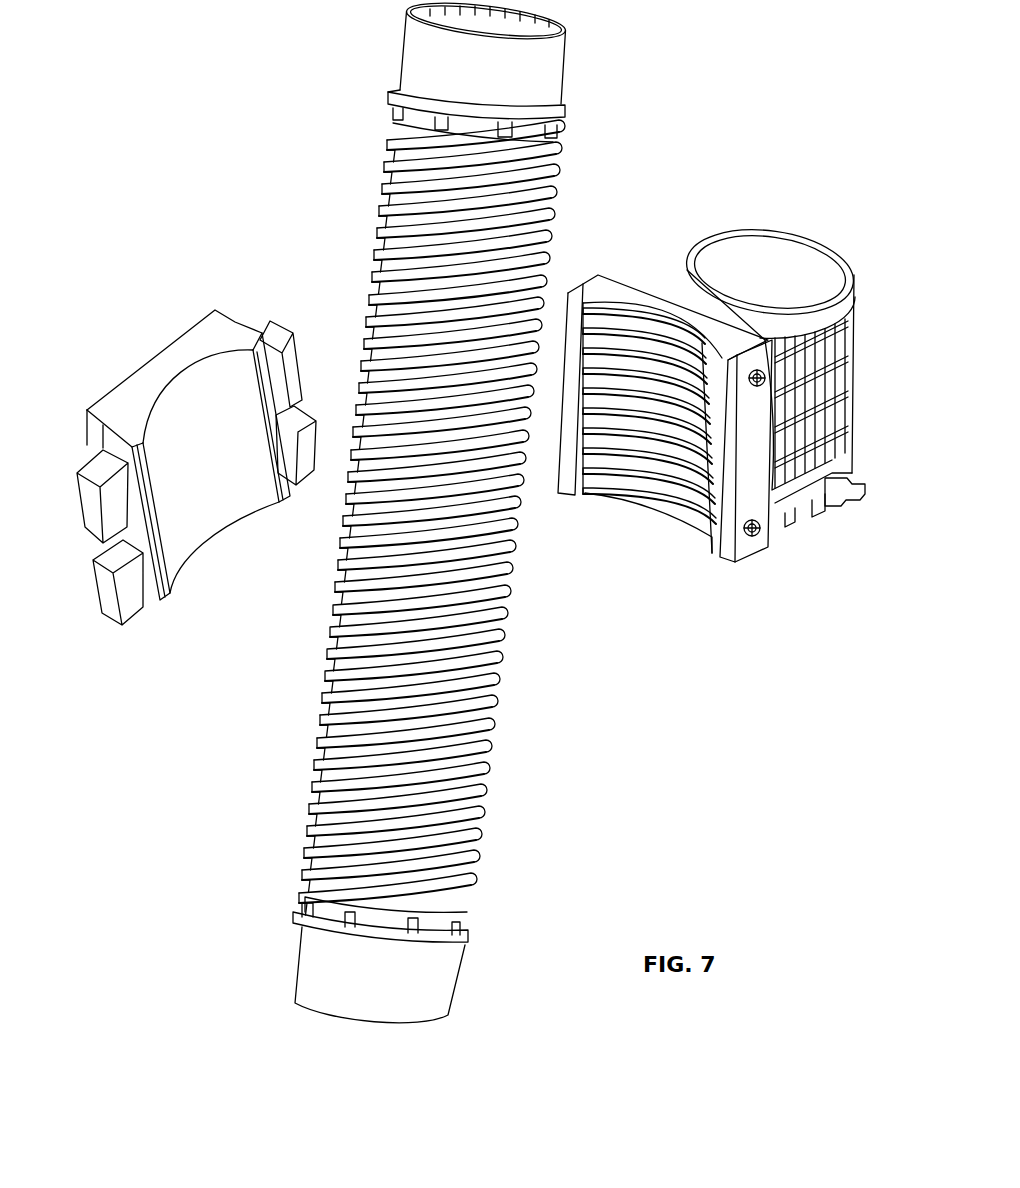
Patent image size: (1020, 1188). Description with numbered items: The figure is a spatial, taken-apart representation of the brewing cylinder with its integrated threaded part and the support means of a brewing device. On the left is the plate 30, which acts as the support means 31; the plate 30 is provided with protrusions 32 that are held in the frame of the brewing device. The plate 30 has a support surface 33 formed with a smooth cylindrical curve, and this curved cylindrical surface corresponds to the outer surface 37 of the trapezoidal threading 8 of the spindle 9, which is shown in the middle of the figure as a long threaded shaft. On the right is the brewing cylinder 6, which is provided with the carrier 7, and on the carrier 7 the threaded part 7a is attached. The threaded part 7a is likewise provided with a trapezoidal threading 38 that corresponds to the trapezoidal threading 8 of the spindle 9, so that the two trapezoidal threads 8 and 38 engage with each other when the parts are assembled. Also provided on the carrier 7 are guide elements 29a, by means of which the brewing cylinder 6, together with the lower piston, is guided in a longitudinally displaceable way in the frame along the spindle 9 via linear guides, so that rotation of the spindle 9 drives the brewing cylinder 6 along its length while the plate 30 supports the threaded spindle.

The brewing cylinder 6 is at (810, 235).
The carrier 7 is at (795, 327).
The threaded part 7a is at (662, 305).
The trapezoidal threading 8 is at (397, 257).
The spindle 9 is at (443, 635).
The guide elements 29a is at (590, 287).
The plate 30 is at (200, 340).
The support means 31 is at (127, 368).
The protrusions 32 is at (103, 520).
The support surface 33 is at (198, 513).
The outer surface 37 is at (320, 645).
The trapezoidal threading 38 is at (625, 487).